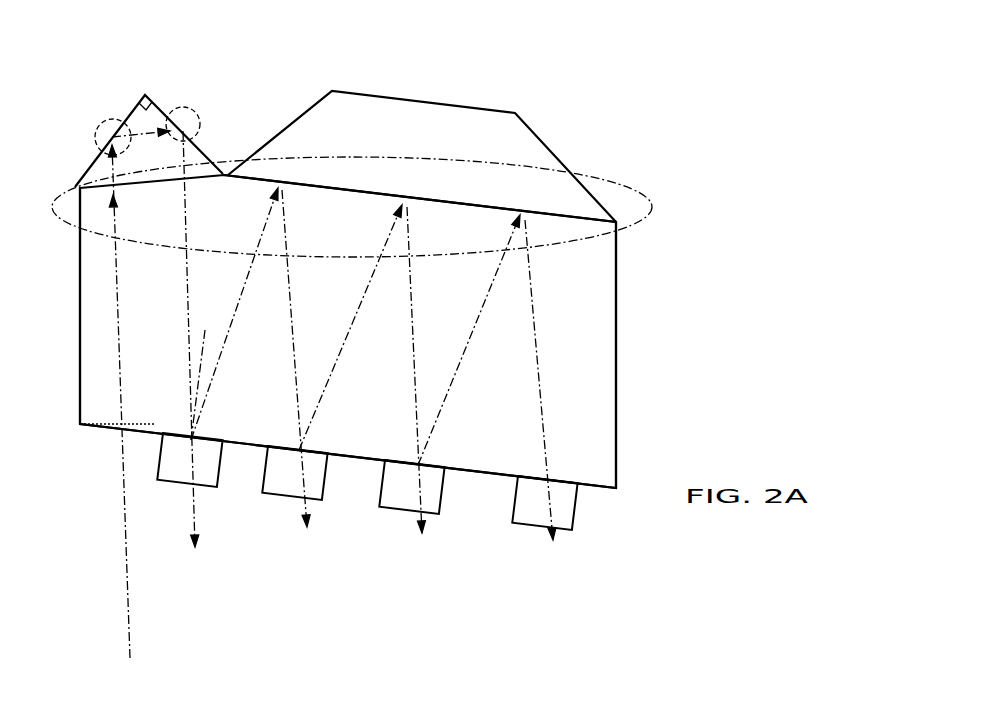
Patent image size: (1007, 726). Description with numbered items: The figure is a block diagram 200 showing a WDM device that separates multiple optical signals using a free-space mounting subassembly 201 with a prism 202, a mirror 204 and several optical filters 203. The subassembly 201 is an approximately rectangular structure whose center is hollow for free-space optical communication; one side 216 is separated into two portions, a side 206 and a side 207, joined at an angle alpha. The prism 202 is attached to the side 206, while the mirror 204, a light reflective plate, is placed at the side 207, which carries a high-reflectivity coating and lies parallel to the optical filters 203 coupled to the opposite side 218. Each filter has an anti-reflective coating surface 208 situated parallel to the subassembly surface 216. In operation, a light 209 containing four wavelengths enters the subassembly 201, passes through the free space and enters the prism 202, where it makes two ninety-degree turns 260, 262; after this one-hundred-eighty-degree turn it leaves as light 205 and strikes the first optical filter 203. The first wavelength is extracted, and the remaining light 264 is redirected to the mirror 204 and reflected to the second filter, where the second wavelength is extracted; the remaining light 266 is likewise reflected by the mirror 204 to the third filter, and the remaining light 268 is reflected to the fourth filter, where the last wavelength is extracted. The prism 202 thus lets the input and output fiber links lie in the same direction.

The diagram 200 is at (605, 33).
The subassembly 201 is at (618, 370).
The prism 202 is at (148, 95).
The optical filters 203 is at (220, 473).
The mirror 204 is at (430, 103).
The light 205 is at (185, 242).
The side 206 is at (100, 193).
The side 207 is at (563, 221).
The anti-reflective coating surface 208 is at (432, 462).
The light 209 is at (120, 555).
The side 216 is at (593, 177).
The side 218 is at (600, 492).
The 90-degree turn 260 is at (97, 135).
The 90-degree turn 262 is at (193, 116).
The light 264 is at (237, 313).
The light 266 is at (362, 307).
The light 268 is at (482, 307).